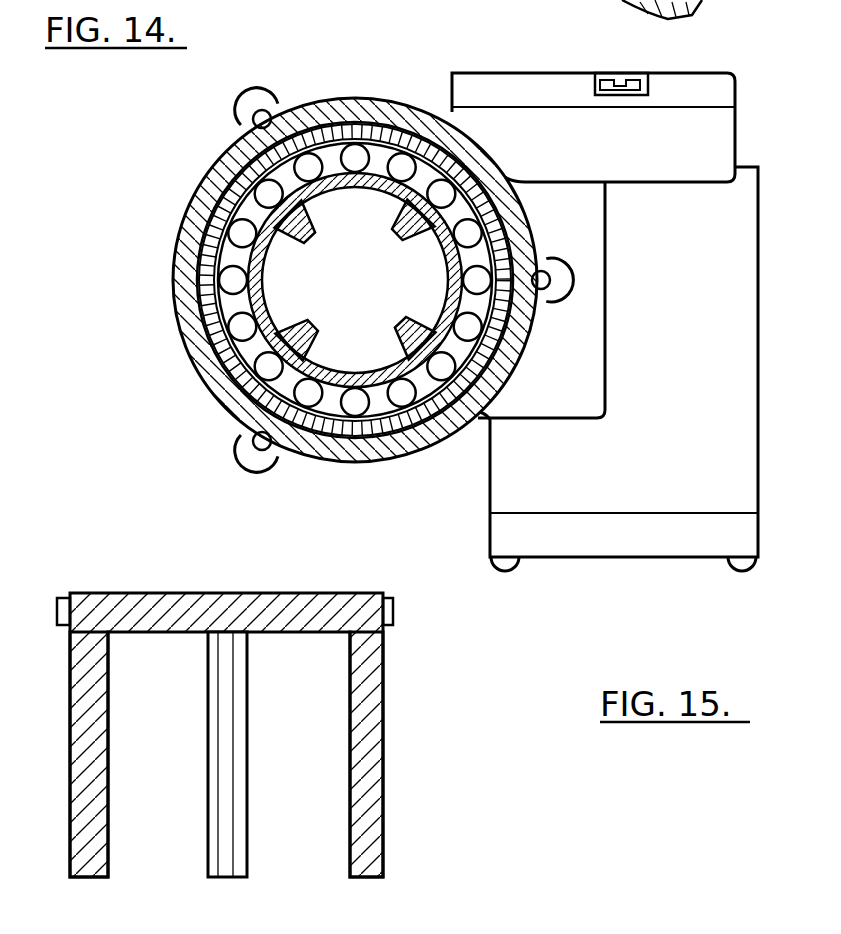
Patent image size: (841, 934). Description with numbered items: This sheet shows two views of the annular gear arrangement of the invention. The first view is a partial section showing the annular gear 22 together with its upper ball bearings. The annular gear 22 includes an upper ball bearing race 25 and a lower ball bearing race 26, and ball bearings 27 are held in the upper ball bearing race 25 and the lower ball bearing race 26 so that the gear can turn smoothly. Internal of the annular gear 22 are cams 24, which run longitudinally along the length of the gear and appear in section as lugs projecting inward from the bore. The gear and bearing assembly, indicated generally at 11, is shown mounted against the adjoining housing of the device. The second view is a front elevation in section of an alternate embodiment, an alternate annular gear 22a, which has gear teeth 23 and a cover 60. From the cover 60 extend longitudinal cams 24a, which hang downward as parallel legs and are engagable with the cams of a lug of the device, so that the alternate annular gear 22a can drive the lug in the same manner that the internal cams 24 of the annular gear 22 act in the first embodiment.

In FIG. 14, the bearing assembly 11 is at (336, 90).
In FIG. 14, the annular gear 22 is at (200, 315).
In FIG. 14, the cams 24 is at (318, 240).
In FIG. 14, the upper ball bearing race 25 is at (252, 348).
In FIG. 14, the lower ball bearing race 26 is at (678, 14).
In FIG. 14, the ball bearings 27 is at (265, 192).
In FIG. 15, the alternate annular gear 22a is at (184, 586).
In FIG. 15, the gear teeth 23 is at (395, 622).
In FIG. 15, the longitudinal cams 24a is at (108, 760).
In FIG. 15, the cover 60 is at (130, 592).